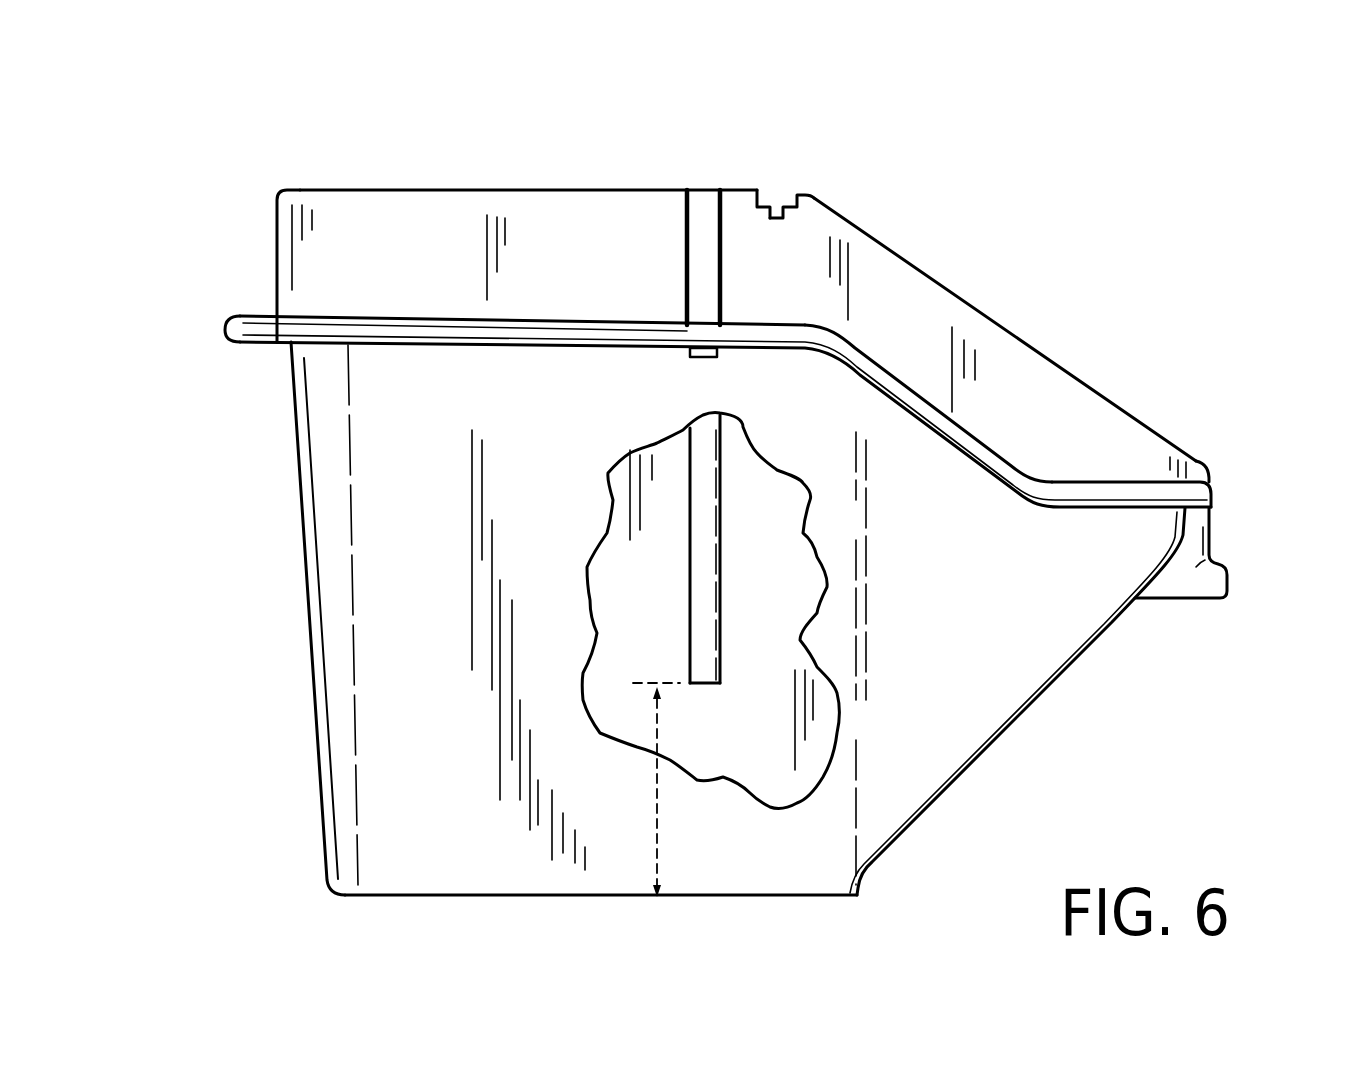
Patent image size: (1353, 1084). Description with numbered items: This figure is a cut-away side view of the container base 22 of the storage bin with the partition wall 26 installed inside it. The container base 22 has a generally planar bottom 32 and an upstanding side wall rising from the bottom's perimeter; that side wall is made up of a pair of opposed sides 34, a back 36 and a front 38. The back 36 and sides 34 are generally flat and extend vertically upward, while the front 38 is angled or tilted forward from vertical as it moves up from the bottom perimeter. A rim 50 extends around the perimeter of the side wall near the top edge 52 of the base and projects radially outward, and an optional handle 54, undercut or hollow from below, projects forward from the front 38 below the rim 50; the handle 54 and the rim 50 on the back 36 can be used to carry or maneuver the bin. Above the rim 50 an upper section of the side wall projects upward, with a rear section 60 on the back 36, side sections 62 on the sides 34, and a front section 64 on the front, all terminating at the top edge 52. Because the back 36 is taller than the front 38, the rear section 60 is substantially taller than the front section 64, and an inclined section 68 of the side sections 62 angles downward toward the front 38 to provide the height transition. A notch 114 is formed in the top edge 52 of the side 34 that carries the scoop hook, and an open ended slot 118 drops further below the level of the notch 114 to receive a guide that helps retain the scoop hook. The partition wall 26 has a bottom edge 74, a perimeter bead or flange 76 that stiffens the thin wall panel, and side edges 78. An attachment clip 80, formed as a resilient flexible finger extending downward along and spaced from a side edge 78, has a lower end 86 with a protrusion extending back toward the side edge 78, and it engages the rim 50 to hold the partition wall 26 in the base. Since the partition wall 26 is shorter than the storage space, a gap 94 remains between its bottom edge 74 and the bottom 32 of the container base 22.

The container base 22 is at (166, 143).
The partition wall 26 is at (747, 543).
The bottom 32 is at (627, 897).
The sides 34 is at (368, 588).
The back 36 is at (300, 504).
The front 38 is at (1070, 668).
The rim 50 is at (362, 315).
The top edge 52 is at (873, 237).
The handle 54 is at (1201, 567).
The rear section 60 is at (277, 262).
The side sections 62 is at (413, 215).
The front section 64 is at (1200, 470).
The inclined section 68 is at (967, 325).
The bottom edge 74 is at (703, 687).
The bead or flange 76 is at (690, 567).
The side edges 78 is at (710, 608).
The attachment clip 80 is at (706, 206).
The lower end 86 is at (702, 372).
The gap 94 is at (657, 790).
The notch 114 is at (773, 212).
The open ended slot 118 is at (781, 210).